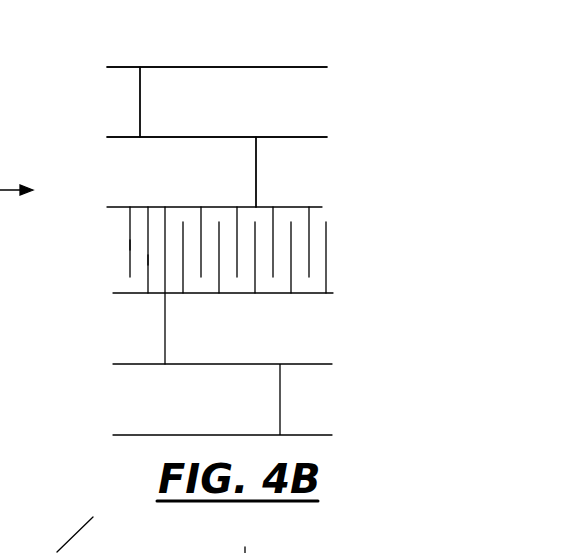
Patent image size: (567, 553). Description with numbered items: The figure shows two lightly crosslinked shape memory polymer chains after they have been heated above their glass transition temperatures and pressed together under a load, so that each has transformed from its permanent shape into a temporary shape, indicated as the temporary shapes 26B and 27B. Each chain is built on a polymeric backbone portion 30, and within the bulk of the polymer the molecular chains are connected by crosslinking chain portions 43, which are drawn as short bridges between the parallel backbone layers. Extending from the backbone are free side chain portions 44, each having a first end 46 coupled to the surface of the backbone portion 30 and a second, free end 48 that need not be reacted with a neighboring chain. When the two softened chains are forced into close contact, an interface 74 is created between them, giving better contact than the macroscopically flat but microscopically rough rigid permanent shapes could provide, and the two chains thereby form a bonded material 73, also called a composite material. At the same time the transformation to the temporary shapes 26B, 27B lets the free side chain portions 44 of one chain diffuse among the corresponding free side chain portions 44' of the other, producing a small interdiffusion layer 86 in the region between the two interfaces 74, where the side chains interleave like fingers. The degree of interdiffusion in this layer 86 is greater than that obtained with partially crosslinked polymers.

The polymeric backbone portion 30 is at (150, 66).
The bonded material 73 is at (240, 56).
The crosslinking chain portion 43 is at (138, 75).
The free end 48 is at (147, 221).
The first end 46 is at (130, 212).
The free side chain portion 44 is at (95, 260).
The free side chain portion 44' is at (182, 295).
The interface 74 is at (322, 209).
The interdiffusion layer 86 is at (390, 222).
The temporary shape of first lightly crosslinked SMP chain 26B is at (94, 169).
The temporary shape of second lightly crosslinked SMP chain 27B is at (361, 359).